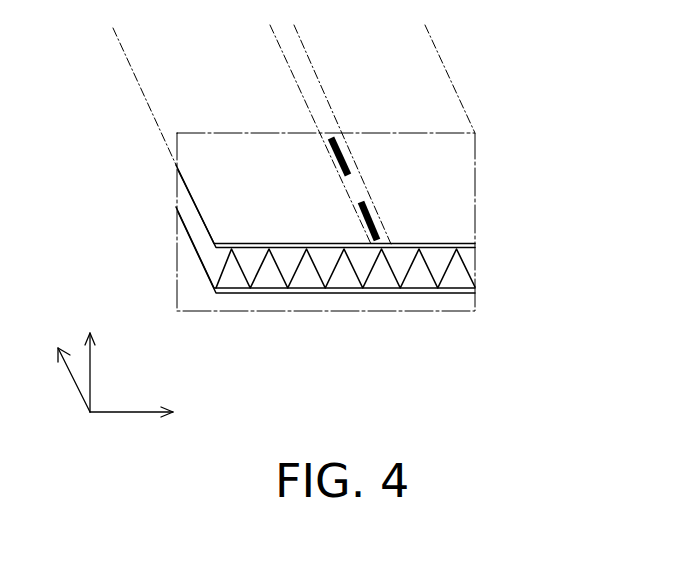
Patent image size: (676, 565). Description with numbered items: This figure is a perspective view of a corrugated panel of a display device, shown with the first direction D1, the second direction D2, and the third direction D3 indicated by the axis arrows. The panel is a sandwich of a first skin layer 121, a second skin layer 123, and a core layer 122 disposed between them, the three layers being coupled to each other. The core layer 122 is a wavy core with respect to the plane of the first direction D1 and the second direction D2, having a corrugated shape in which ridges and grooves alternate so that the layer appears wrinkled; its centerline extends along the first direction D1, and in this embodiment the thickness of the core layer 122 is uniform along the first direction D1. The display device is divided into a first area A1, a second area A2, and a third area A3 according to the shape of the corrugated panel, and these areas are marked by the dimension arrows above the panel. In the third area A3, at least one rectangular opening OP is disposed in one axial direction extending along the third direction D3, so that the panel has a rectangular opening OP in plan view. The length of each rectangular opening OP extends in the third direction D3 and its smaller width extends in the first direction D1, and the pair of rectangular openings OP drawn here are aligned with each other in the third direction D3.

The first skin layer 121 is at (458, 205).
The rectangular opening OP is at (379, 221).
The core layer 122 is at (471, 272).
The second skin layer 123 is at (476, 293).
The first area A1 is at (276, 46).
The second area A2 is at (433, 46).
The third area A3 is at (313, 28).
The first direction D1 is at (150, 415).
The second direction D2 is at (91, 361).
The third direction D3 is at (65, 367).